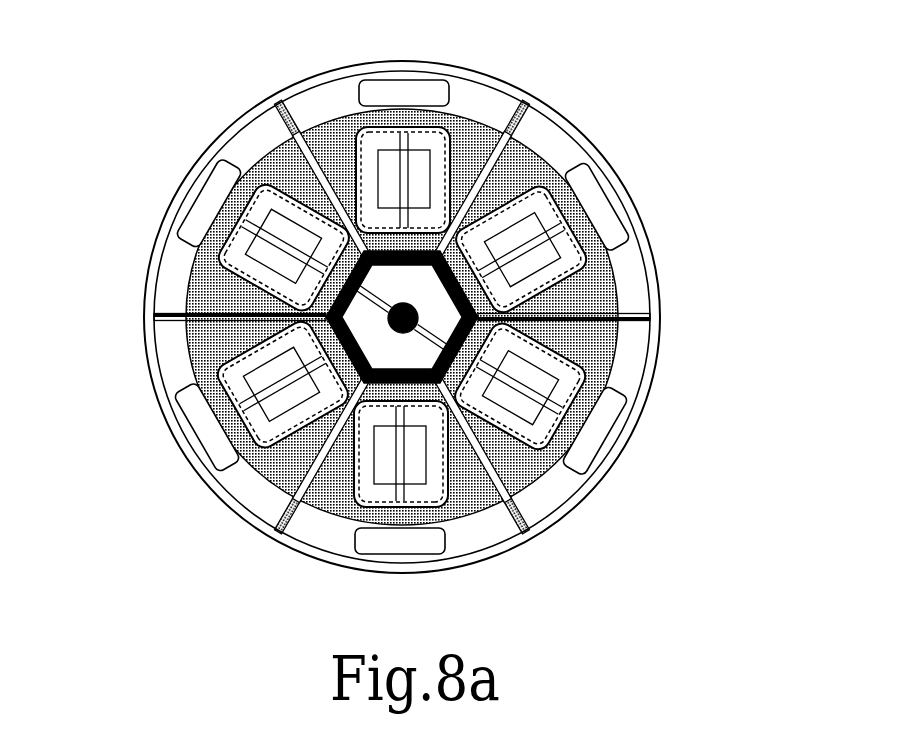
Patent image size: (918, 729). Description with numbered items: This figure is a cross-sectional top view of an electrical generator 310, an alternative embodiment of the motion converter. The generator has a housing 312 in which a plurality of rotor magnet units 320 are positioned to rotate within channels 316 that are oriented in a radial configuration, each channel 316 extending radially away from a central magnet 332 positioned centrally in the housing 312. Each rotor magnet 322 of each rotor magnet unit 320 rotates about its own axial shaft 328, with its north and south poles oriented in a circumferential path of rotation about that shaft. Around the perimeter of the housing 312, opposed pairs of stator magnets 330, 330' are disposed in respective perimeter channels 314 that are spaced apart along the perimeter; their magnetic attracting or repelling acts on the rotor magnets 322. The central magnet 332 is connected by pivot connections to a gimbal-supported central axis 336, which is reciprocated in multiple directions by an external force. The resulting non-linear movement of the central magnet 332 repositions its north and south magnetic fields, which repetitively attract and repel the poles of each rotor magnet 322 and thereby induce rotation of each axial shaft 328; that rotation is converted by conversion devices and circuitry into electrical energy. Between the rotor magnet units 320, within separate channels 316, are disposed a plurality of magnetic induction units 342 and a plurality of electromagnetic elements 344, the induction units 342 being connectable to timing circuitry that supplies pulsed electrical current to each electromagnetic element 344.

The electrical generator 310 is at (116, 103).
The housing 312 is at (305, 77).
The perimeter channels 314 is at (160, 240).
The channels 316 is at (498, 125).
The rotor magnet units 320 is at (600, 182).
The rotor magnet 322 is at (322, 150).
The axial shaft 328 is at (318, 135).
The stator magnet 330 is at (445, 287).
The stator magnet 330' is at (413, 319).
The central magnet 332 is at (527, 520).
The central axis 336 is at (392, 333).
The magnetic induction units 342 is at (390, 162).
The electromagnetic elements 344 is at (330, 160).